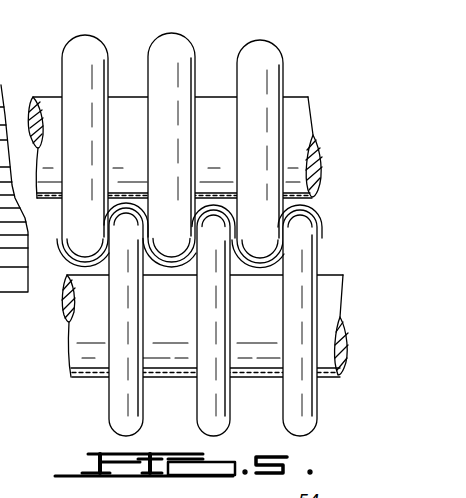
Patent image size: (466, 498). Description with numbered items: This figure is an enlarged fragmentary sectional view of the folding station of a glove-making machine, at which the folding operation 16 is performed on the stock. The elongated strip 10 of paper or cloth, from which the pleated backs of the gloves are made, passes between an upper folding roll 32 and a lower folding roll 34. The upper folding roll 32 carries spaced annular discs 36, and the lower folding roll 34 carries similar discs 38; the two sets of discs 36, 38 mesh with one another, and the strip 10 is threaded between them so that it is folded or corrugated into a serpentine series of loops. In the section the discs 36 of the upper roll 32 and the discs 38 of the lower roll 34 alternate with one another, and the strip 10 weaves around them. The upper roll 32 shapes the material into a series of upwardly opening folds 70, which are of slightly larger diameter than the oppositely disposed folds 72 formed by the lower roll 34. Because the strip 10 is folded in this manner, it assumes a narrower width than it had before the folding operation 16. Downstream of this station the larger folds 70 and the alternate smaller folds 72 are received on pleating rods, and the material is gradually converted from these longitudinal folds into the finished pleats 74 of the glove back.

The elongated strip 10 is at (65, 258).
The folding operation 16 is at (330, 209).
The upper folding roll 32 is at (303, 123).
The lower folding roll 34 is at (342, 288).
The annular discs 36 is at (286, 67).
The annular discs 38 is at (317, 256).
The upwardly opening folds 70 is at (172, 262).
The oppositely disposed folds 72 is at (115, 222).
The pleats 74 is at (178, 490).